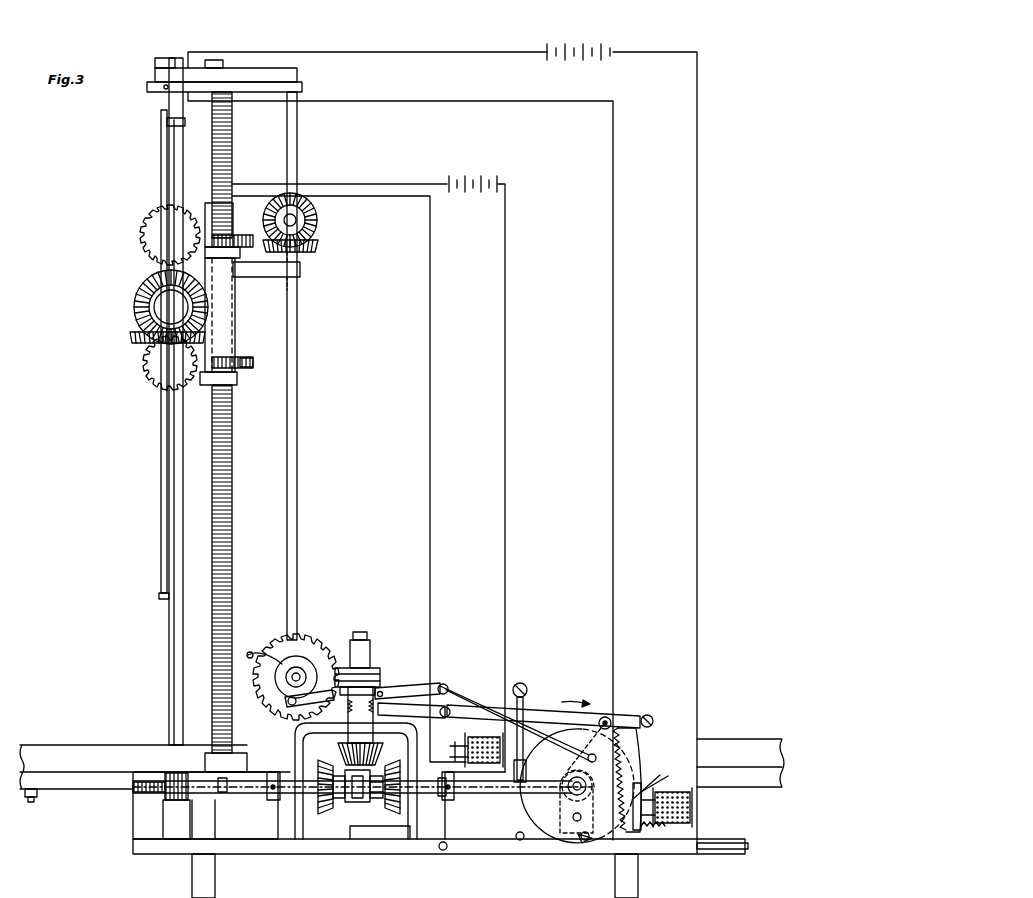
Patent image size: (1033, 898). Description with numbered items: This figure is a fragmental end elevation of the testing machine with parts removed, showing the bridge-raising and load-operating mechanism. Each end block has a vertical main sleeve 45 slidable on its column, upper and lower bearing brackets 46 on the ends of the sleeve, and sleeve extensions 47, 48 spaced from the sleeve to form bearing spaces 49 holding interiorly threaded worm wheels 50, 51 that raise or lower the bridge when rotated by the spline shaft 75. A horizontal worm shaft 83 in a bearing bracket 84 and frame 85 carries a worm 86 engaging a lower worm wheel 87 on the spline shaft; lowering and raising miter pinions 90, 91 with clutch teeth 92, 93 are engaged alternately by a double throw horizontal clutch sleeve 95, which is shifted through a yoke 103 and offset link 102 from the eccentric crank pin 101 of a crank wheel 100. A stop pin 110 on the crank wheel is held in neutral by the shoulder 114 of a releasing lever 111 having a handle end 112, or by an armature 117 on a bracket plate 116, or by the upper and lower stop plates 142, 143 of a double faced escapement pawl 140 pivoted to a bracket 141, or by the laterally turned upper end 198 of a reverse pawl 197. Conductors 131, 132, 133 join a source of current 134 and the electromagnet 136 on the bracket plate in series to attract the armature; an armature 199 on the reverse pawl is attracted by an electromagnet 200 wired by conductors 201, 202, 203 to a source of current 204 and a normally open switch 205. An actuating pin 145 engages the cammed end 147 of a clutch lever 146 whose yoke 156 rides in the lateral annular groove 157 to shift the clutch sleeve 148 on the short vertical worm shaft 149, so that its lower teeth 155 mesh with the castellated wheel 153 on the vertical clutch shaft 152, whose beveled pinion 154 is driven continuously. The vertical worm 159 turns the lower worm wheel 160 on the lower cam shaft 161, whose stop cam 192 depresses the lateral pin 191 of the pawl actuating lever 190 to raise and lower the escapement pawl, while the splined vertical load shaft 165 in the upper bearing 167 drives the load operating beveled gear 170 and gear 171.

The normally open switch 205 is at (168, 60).
The conductor 203 is at (388, 52).
The source of current 204 is at (596, 45).
The conductor 202 is at (697, 503).
The conductor 201 is at (613, 551).
The conductor 131 is at (380, 184).
The source of current 134 is at (476, 176).
The conductor 132 is at (413, 196).
The conductor 133 is at (505, 232).
The spline shaft 75 is at (169, 657).
The splined vertical load shaft 165 is at (300, 428).
The vertical main sleeve 45 is at (233, 308).
The bearing brackets 46 is at (203, 232).
The sleeve extension 47 is at (212, 212).
The bearing spaces 49 is at (244, 235).
The worm wheel 50 is at (240, 250).
The worm wheel 51 is at (250, 366).
The sleeve extension 48 is at (232, 380).
The gear 171 is at (316, 216).
The load operating beveled gear 170 is at (318, 243).
The upper bearing 167 is at (300, 268).
The lower worm wheel 160 is at (292, 656).
The lower cam shaft 161 is at (290, 672).
The stop cam 192 is at (650, 752).
The lateral pin 191 is at (285, 702).
The short vertical worm shaft 149 is at (367, 634).
The yoke 156 is at (356, 640).
The lateral annular groove 157 is at (340, 700).
The clutch sleeve 148 is at (340, 668).
The vertical worm 159 is at (372, 668).
The castellated wheel 153 is at (385, 688).
The vertical clutch shaft 152 is at (411, 710).
The lower teeth 155 is at (348, 720).
The beveled pinion 154 is at (340, 746).
The double throw horizontal clutch sleeve 95 is at (376, 776).
The clutch teeth 92 is at (355, 838).
The clutch teeth 93 is at (380, 840).
The horizontal worm shaft 83 is at (247, 793).
The offset link 102 is at (471, 794).
The bearing bracket 84 is at (220, 832).
The frame 85 is at (310, 828).
The manually operated releasing lever 111 is at (527, 854).
The handle end 112 is at (735, 849).
The lower worm wheel 87 is at (145, 782).
The worm 86 is at (168, 798).
The lowering miter pinion 90 is at (325, 814).
The raising miter pinion 91 is at (398, 812).
The yoke 103 is at (358, 800).
The pawl actuating lever 190 is at (466, 705).
The clutch lever 146 is at (438, 683).
The solenoid 136 is at (478, 737).
The bracket plate 116 is at (514, 686).
The armature 117 is at (527, 700).
The upper stop plate 142 is at (575, 700).
The lower stop plate 143 is at (612, 728).
The double faced escapement pawl 140 is at (608, 718).
The bracket 141 is at (653, 724).
The crank wheel 100 is at (522, 808).
The eccentric crank pin 101 is at (570, 797).
The cammed end 147 is at (592, 778).
The actuating pin 145 is at (582, 815).
The laterally turned upper end 198 is at (641, 790).
The reverse pawl 197 is at (665, 776).
The armature 199 is at (676, 792).
The electromagnet 200 is at (695, 827).
The stop pin 110 is at (585, 841).
The shoulder 114 is at (578, 840).